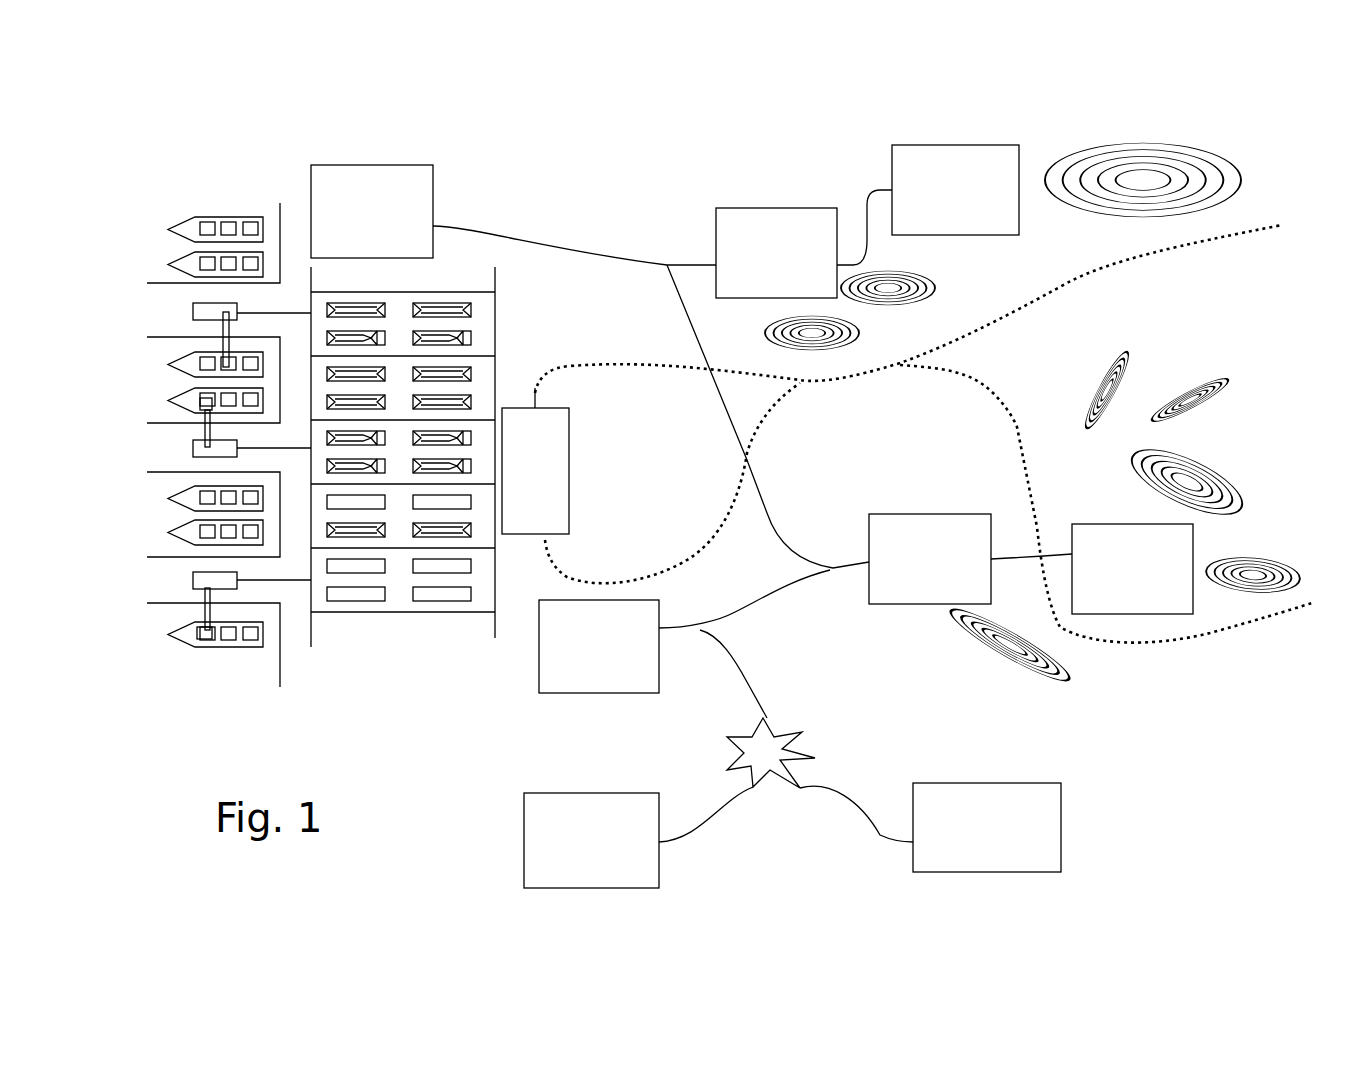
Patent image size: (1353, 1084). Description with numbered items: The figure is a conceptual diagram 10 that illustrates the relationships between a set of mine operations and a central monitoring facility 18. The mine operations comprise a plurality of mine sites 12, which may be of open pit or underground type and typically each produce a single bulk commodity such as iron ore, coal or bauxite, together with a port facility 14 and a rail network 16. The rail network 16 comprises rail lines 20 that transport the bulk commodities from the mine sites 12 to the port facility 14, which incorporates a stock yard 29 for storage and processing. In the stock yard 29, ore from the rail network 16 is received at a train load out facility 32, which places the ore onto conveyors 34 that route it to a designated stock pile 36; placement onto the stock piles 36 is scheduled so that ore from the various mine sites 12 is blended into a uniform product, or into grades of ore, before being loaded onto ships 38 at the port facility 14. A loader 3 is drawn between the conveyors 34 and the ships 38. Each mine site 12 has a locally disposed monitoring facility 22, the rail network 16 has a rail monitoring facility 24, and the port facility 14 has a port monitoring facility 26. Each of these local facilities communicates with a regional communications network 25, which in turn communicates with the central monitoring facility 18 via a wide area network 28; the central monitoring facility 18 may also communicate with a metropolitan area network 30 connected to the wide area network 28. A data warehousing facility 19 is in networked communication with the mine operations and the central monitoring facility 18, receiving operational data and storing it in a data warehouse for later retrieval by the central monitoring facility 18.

The conceptual diagram 10 is at (652, 165).
The port facility 14 is at (245, 163).
The ships 38 is at (172, 229).
The ship loader 3 is at (280, 313).
The conveyors 34 is at (338, 291).
The stock pile 36 is at (463, 330).
The stock yard 29 is at (424, 695).
The train load out facility 32 is at (570, 445).
The port monitoring facility 26 is at (420, 165).
The regional communications network 25 is at (588, 251).
The monitoring facility 22 is at (745, 208).
The mine sites 12 is at (930, 316).
The rail lines 20 is at (1070, 287).
The rail network 16 is at (950, 400).
The rail monitoring facility 24 is at (615, 693).
The data warehousing facility 19 is at (543, 793).
The wide area network 28 is at (790, 733).
The metropolitan area network 30 is at (840, 790).
The central monitoring facility 18 is at (1062, 820).